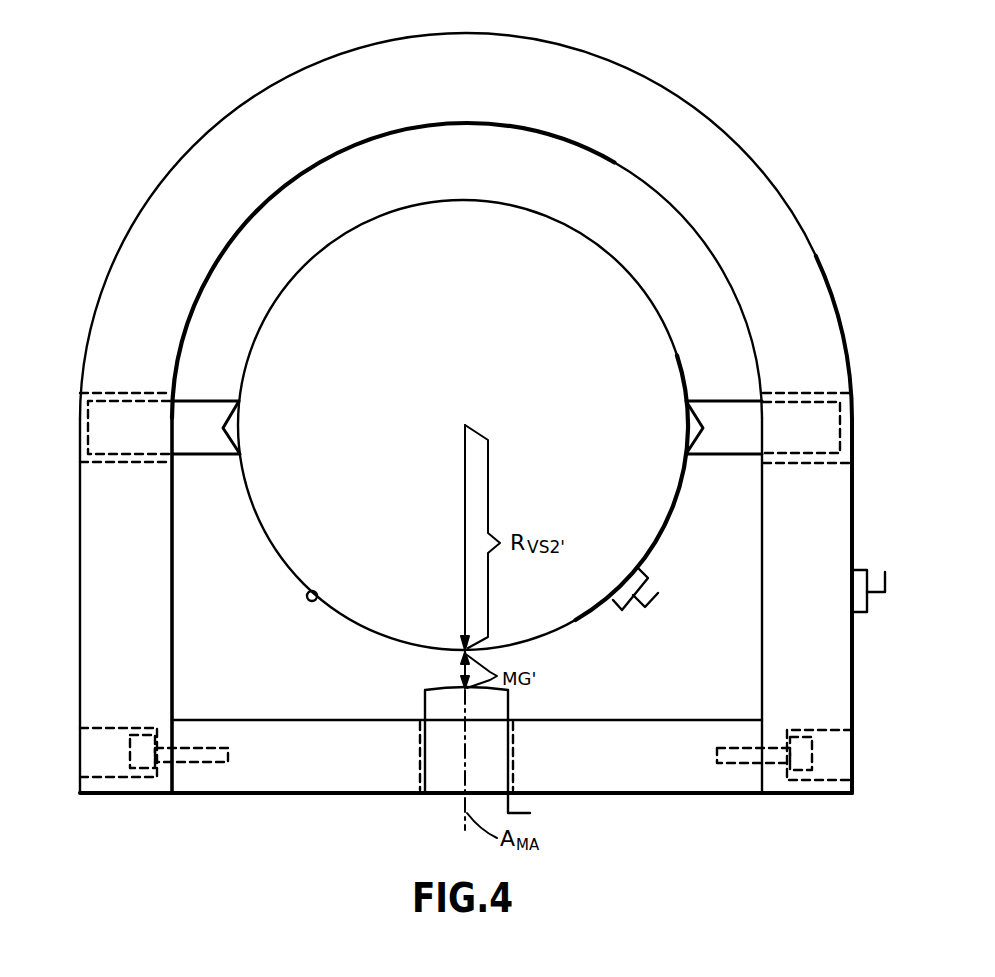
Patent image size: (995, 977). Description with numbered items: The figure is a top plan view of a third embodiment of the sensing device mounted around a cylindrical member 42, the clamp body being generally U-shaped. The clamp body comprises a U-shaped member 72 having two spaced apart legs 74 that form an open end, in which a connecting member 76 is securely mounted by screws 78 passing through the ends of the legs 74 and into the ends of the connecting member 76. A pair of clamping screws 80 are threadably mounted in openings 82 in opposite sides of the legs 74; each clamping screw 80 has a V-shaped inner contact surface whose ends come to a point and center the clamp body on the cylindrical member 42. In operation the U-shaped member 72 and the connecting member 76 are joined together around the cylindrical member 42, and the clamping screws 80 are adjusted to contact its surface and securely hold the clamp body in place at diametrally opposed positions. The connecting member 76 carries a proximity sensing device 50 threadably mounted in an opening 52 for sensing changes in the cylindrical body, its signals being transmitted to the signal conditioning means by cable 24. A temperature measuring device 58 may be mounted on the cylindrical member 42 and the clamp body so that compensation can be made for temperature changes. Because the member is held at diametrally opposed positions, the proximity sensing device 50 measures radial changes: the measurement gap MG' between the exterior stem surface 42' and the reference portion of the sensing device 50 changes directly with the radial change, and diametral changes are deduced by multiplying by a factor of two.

The U-shaped member 72 is at (465, 33).
The legs 74 is at (83, 643).
The connecting member 76 is at (620, 792).
The cylindrical member 42 is at (477, 425).
The exterior stem surface 42' is at (348, 580).
The clamping screws 80 is at (86, 418).
The openings 82 is at (806, 392).
The screws 78 is at (732, 763).
The temperature measuring device 58 is at (648, 577).
The proximity sensing device 50 is at (488, 758).
The opening 52 is at (418, 757).
The cable 24 is at (530, 813).